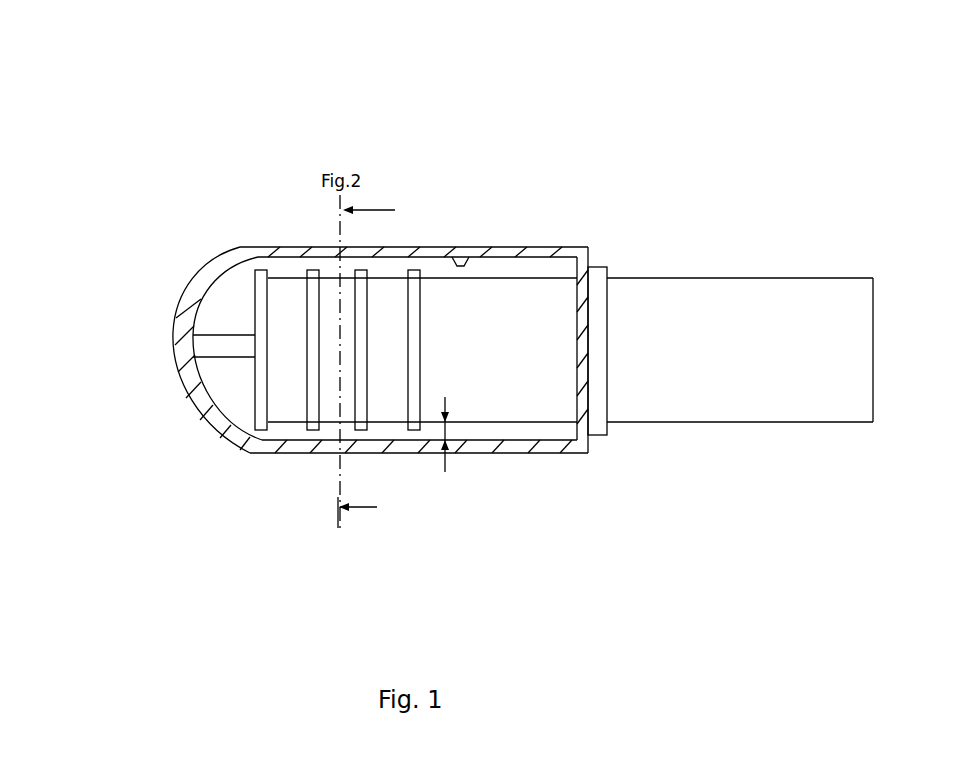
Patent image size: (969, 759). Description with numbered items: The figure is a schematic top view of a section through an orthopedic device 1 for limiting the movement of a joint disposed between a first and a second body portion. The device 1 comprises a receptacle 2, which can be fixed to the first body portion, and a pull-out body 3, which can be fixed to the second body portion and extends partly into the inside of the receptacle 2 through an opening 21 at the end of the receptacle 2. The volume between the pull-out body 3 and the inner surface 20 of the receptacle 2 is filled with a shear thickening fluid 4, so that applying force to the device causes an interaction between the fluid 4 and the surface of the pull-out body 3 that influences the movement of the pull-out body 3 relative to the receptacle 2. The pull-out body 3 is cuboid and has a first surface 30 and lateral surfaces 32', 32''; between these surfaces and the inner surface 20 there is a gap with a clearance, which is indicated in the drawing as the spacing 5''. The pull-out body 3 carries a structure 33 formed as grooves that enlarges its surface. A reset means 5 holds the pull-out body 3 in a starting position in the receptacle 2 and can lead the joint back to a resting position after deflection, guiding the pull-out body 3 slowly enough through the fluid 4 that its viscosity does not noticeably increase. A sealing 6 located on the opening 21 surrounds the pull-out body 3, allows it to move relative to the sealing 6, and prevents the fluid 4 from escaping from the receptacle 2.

The orthopedic device 1 is at (530, 152).
The receptacle 2 is at (213, 236).
The pull-out body 3 is at (693, 442).
The shear thickening fluid 4 is at (385, 432).
The reset means 5 is at (150, 385).
The spacing 5'' is at (393, 471).
The sealing 6 is at (603, 267).
The inner surface 20 is at (452, 250).
The opening 21 is at (578, 357).
The first surface 30 is at (535, 383).
The lateral surface 32' is at (456, 146).
The lateral surface 32'' is at (419, 493).
The structure 33 is at (312, 403).